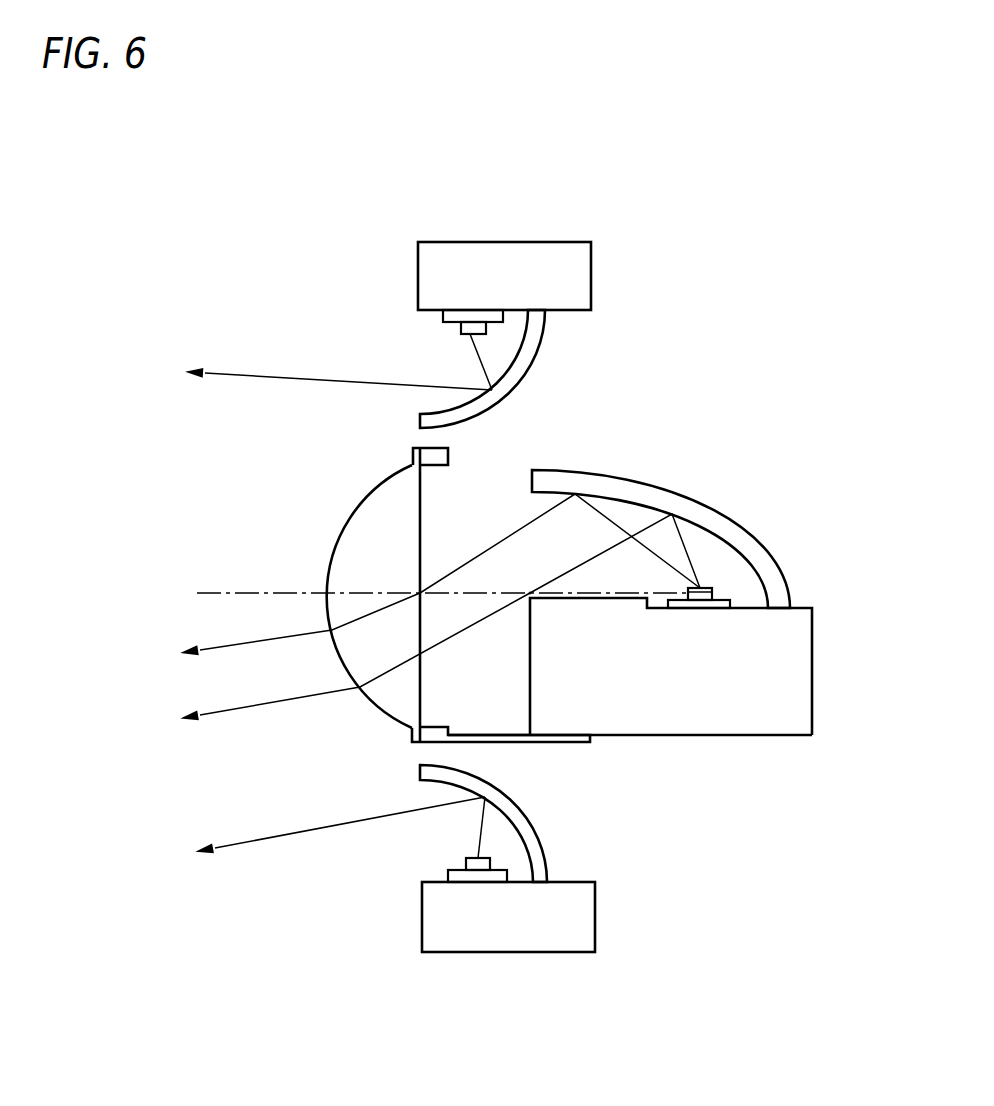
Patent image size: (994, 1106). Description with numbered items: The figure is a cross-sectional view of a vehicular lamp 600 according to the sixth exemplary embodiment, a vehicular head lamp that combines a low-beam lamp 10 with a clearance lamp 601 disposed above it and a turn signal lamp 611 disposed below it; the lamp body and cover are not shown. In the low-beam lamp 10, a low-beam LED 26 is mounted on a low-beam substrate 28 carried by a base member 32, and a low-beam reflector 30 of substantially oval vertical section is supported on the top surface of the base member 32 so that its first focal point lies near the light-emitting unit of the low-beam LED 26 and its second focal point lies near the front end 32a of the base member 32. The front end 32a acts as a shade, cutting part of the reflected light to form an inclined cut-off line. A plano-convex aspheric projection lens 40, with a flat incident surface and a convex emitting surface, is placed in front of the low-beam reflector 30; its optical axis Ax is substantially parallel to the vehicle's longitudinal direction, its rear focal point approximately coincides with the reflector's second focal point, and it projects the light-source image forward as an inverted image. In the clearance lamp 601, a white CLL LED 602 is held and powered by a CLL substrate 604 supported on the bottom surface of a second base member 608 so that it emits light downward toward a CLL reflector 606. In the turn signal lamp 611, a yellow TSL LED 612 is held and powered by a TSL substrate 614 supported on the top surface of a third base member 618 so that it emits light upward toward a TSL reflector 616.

The vehicular lamp 600 is at (293, 178).
The clearance lamp 601 is at (364, 319).
The CLL LED 602 is at (470, 335).
The CLL substrate 604 is at (445, 320).
The CLL reflector 606 is at (524, 383).
The second base member 608 is at (583, 311).
The low-beam lamp 10 is at (337, 493).
The projection lens 40 is at (344, 527).
The low-beam reflector 30 is at (535, 493).
The base member 32 is at (803, 608).
The front end of the base member 32a is at (530, 593).
The low-beam LED 26 is at (700, 588).
The low-beam substrate 28 is at (722, 600).
The optical axis Ax is at (208, 593).
The turn signal lamp 611 is at (380, 869).
The TSL LED 612 is at (470, 858).
The TSL substrate 614 is at (448, 870).
The TSL reflector 616 is at (537, 820).
The third base member 618 is at (580, 881).